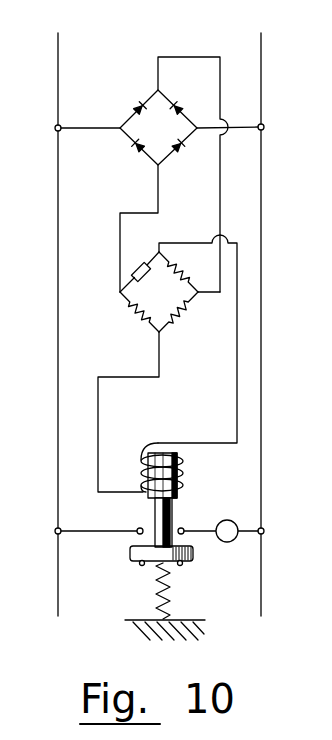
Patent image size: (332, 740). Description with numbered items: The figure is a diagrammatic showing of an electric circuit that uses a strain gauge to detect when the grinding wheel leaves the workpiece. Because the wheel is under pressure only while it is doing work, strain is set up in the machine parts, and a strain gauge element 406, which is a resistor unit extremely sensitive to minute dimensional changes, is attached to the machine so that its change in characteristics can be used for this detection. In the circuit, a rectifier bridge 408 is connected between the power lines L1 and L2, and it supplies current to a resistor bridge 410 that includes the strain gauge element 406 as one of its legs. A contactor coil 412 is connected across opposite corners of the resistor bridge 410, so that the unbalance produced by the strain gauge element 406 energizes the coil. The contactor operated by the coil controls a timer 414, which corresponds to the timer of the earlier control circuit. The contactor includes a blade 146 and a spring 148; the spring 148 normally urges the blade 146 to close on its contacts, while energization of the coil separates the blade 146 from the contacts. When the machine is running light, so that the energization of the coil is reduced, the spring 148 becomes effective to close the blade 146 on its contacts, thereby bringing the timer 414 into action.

The power line L1 is at (56, 315).
The power line L2 is at (258, 315).
The rectifier bridge 408 is at (200, 74).
The resistor bridge 410 is at (155, 328).
The strain gauge element 406 is at (135, 268).
The contactor coil 412 is at (182, 468).
The timer 414 is at (227, 520).
The blade 146 is at (193, 551).
The spring 148 is at (156, 582).